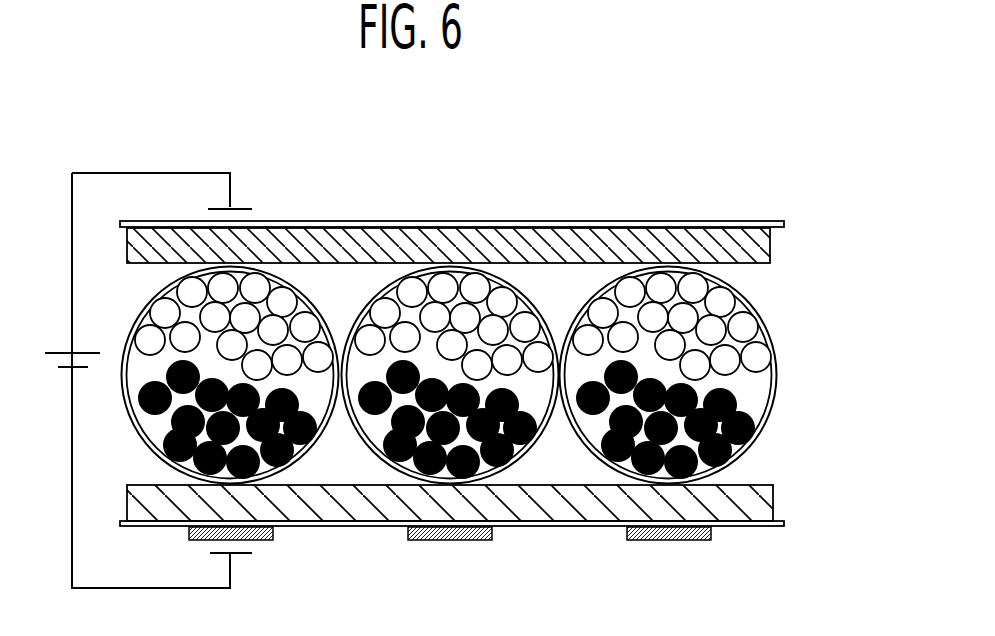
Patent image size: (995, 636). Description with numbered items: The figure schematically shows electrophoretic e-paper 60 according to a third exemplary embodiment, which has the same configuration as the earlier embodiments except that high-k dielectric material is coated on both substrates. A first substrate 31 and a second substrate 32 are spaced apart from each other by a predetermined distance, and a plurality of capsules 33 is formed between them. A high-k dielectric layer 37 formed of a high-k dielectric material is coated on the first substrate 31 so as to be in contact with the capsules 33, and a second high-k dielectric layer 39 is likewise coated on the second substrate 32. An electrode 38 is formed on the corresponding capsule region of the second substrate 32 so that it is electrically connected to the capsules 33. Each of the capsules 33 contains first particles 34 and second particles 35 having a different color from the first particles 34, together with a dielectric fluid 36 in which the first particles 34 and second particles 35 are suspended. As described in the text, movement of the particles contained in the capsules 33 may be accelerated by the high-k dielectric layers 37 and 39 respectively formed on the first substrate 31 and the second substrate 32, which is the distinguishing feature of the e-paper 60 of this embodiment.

The electrophoretic e-paper 60 is at (777, 158).
The first substrate 31 is at (382, 222).
The high-k dielectric layer 37 is at (483, 240).
The capsules 33 is at (771, 335).
The dielectric fluid 36 is at (762, 381).
The first particles 34 is at (735, 298).
The second particles 35 is at (748, 427).
The high-k dielectric layer 39 is at (540, 503).
The second substrate 32 is at (333, 528).
The electrode 38 is at (443, 541).